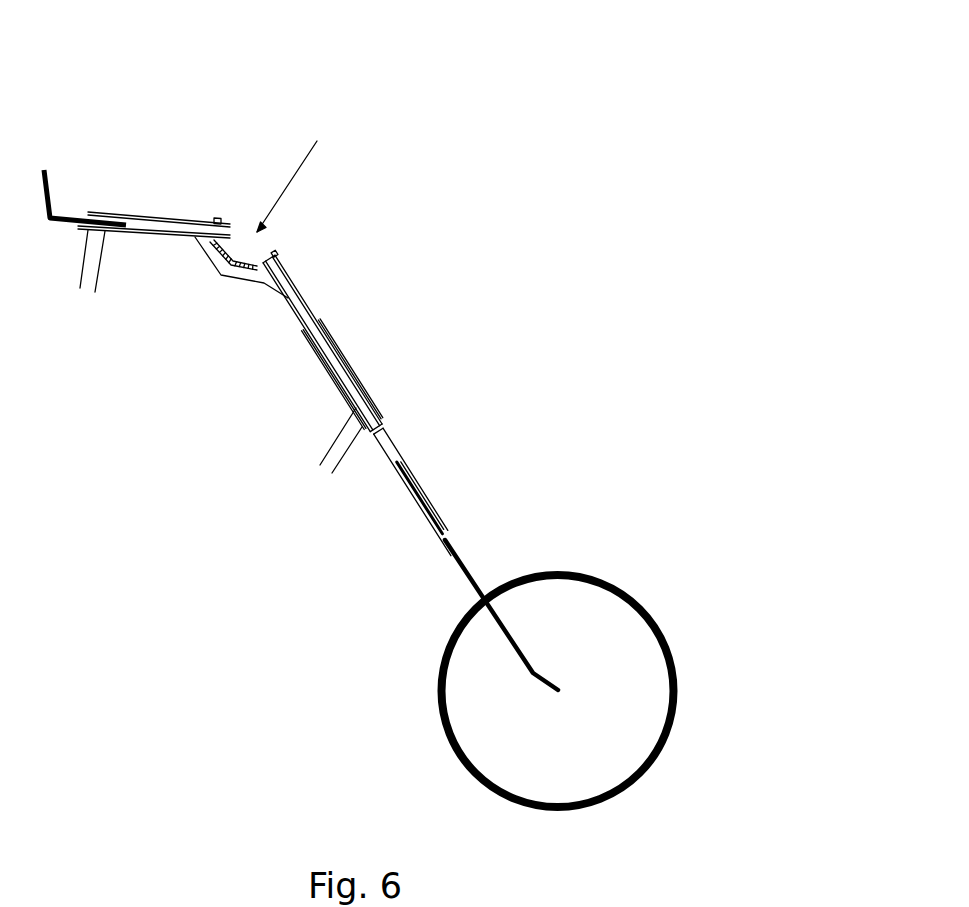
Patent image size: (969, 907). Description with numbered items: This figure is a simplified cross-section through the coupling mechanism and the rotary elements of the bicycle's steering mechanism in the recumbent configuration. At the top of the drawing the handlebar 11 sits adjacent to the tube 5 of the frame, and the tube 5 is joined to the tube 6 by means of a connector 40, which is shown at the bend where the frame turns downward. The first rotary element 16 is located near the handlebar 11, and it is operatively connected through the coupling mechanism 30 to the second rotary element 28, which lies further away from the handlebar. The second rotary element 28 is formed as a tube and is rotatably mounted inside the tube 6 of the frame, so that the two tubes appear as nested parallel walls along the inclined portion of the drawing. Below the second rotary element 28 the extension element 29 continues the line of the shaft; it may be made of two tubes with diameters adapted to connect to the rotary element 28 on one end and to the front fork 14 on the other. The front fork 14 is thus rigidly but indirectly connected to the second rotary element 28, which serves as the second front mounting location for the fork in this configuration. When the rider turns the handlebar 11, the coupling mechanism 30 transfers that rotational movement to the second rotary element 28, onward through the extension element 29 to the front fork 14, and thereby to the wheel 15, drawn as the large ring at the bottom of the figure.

The tube 5 is at (176, 128).
The tube 6 is at (379, 231).
The handlebar 11 is at (94, 127).
The front fork 14 is at (517, 545).
The wheel 15 is at (558, 633).
The first rotary element 16 is at (286, 150).
The second rotary element 28 is at (470, 331).
The extension element 29 is at (505, 421).
The coupling mechanism 30 is at (357, 141).
The connector 40 is at (167, 296).